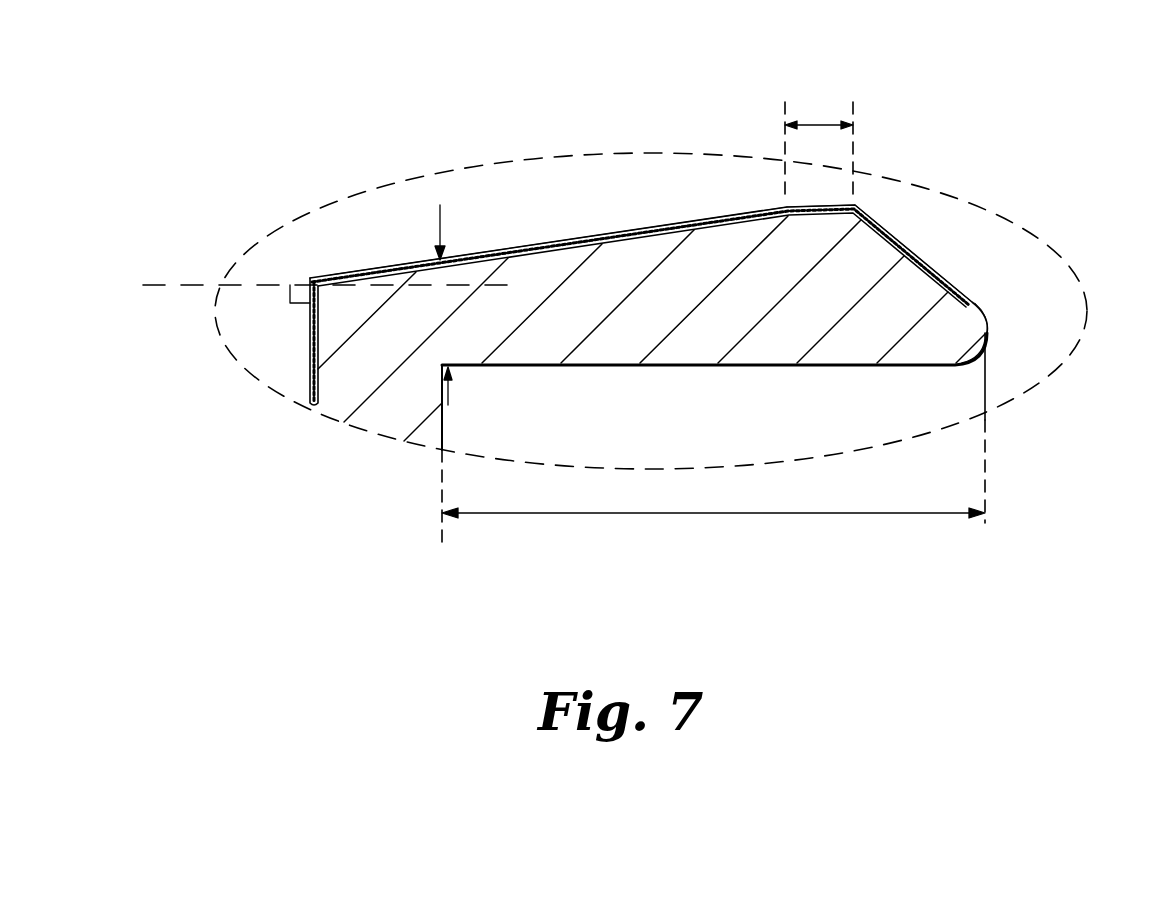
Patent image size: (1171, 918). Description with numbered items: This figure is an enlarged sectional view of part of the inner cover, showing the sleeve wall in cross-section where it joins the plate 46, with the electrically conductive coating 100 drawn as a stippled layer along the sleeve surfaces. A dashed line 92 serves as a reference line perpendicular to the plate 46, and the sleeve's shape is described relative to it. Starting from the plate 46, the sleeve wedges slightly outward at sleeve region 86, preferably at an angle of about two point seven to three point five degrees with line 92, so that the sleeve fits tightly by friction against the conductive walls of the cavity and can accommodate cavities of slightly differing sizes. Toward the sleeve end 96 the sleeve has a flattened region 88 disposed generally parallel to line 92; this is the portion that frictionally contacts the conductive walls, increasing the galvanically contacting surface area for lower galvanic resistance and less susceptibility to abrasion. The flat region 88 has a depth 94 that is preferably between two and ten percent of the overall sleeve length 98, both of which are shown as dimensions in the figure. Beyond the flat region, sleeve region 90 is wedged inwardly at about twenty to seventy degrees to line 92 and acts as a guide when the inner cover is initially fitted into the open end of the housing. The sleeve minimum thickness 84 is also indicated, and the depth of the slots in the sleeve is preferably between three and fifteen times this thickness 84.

The plate 46 is at (322, 374).
The sleeve minimum thickness 84 is at (438, 232).
The sleeve region 86 is at (518, 243).
The flattened region 88 is at (810, 208).
The sleeve region 90 is at (900, 240).
The dashed line 92 is at (162, 288).
The depth 94 is at (813, 122).
The sleeve end 96 is at (992, 334).
The sleeve length 98 is at (715, 513).
The electrically conductive coating 100 is at (310, 322).